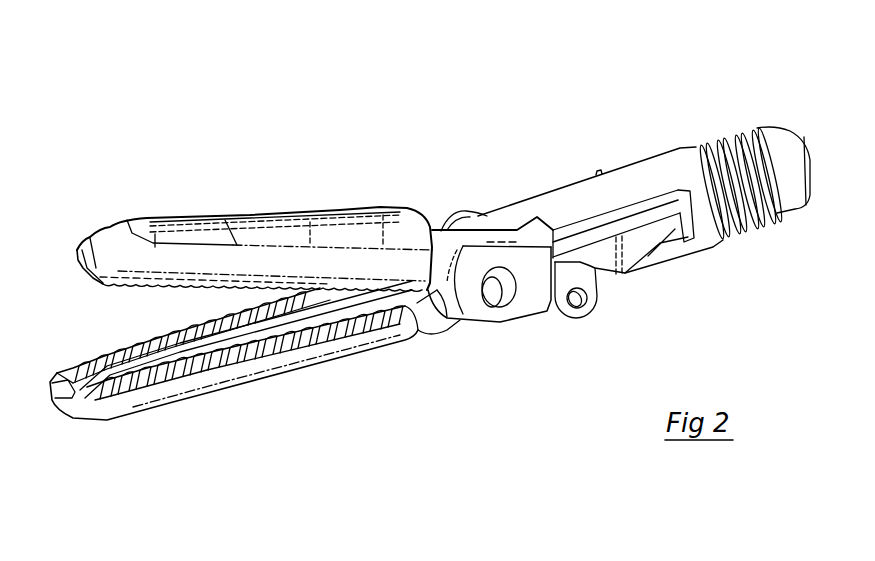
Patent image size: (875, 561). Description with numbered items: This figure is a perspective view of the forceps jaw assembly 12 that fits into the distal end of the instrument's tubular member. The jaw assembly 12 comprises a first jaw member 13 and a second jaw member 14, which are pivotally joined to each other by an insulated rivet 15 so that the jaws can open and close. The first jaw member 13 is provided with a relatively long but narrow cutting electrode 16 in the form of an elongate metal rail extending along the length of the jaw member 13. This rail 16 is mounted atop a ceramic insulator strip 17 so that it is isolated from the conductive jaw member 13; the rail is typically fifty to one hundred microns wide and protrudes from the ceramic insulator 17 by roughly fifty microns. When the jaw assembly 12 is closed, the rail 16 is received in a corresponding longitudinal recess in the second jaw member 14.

The forceps jaw assembly 12 is at (246, 170).
The first jaw member 13 is at (103, 420).
The second jaw member 14 is at (118, 247).
The insulated rivet 15 is at (499, 292).
The cutting electrode 16 is at (120, 347).
The ceramic insulator strip 17 is at (137, 367).